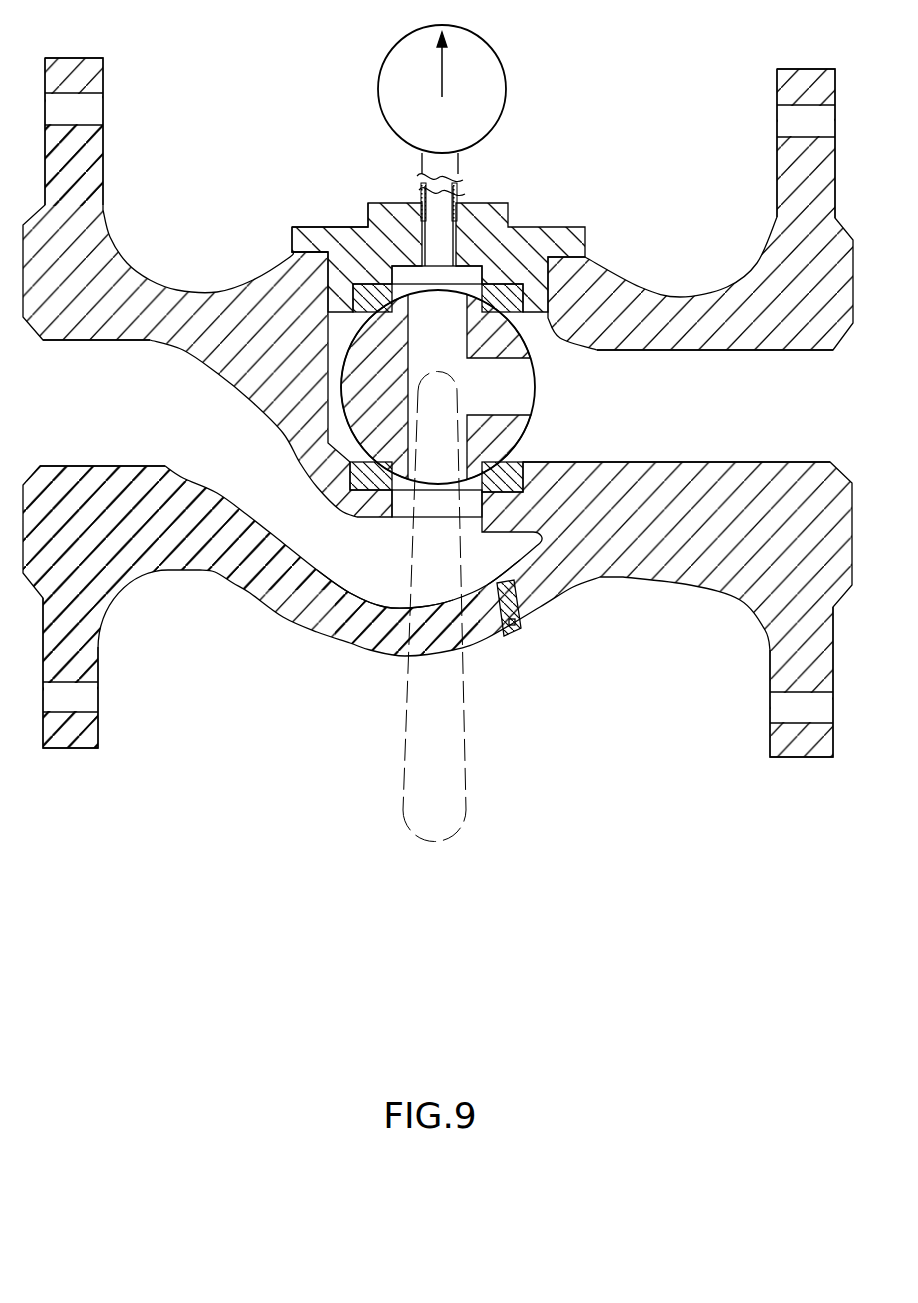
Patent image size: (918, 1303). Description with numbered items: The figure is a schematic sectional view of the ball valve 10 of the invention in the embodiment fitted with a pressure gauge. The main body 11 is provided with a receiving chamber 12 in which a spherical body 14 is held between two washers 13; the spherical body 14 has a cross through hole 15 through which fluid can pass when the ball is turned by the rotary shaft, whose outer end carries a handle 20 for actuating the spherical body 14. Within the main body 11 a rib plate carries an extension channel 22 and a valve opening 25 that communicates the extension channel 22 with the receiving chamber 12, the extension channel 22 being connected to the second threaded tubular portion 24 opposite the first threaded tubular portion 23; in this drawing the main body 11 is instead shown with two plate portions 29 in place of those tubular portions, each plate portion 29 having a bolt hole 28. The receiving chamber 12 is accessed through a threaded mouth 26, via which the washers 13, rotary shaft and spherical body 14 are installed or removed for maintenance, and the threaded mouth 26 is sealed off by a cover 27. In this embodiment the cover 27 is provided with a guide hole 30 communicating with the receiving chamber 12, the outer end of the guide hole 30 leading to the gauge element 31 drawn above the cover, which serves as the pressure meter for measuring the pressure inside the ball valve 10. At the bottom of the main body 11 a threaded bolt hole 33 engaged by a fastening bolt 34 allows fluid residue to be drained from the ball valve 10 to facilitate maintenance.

The ball valve 10 is at (332, 757).
The main body 11 is at (582, 527).
The receiving chamber 12 is at (540, 345).
The washers 13 is at (370, 290).
The spherical body 14 is at (358, 372).
The cross through hole 15 is at (437, 310).
The handle 20 is at (413, 831).
The extension channel 22 is at (390, 592).
The first threaded tubular portion 23 is at (688, 370).
The second threaded tubular portion 24 is at (172, 370).
The valve opening 25 is at (405, 512).
The threaded mouth 26 is at (303, 251).
The cover 27 is at (485, 227).
The bolt hole 28 is at (97, 108).
The plate portions 29 is at (90, 160).
The guide hole 30 is at (440, 208).
The handwheel 31 is at (381, 70).
The threaded bolt hole 33 is at (492, 598).
The fastening bolt 34 is at (512, 626).